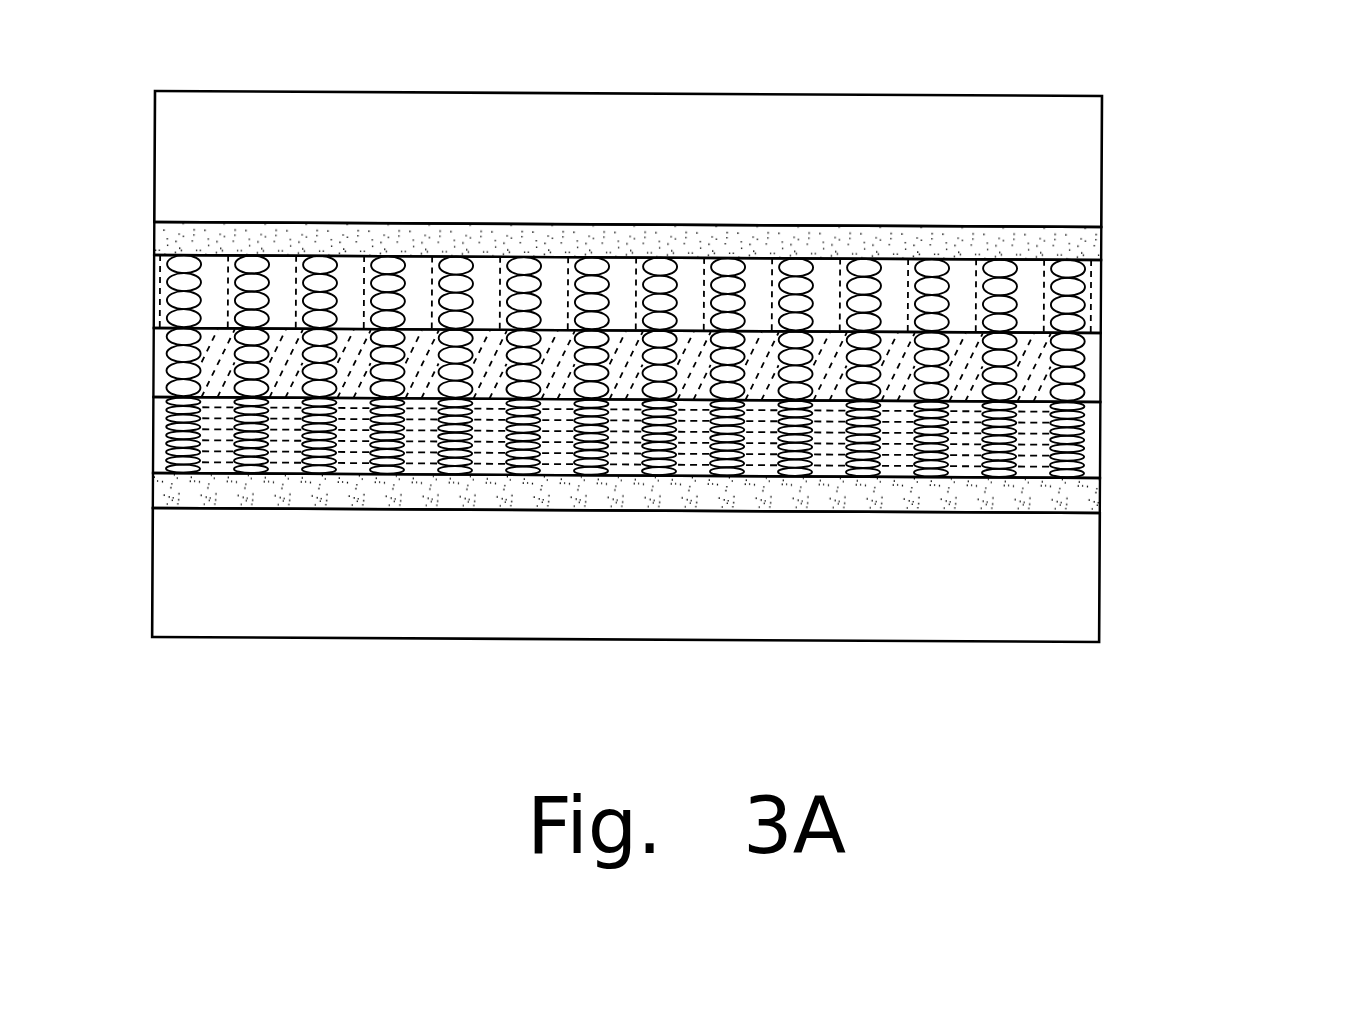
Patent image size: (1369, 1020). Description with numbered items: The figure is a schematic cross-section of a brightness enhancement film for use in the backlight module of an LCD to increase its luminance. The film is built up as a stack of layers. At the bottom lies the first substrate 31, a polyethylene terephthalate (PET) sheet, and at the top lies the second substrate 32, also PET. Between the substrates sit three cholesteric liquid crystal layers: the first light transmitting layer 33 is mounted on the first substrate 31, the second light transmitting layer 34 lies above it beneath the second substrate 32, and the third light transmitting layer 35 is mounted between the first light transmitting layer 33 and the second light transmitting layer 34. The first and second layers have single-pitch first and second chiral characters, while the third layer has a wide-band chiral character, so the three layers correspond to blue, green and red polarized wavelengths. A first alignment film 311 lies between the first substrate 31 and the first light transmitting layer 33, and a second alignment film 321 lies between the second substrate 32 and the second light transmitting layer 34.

The first substrate 31 is at (1072, 597).
The first alignment film 311 is at (1072, 498).
The second substrate 32 is at (1073, 160).
The second alignment film 321 is at (1073, 248).
The first light transmitting layer 33 is at (1087, 430).
The second light transmitting layer 34 is at (1073, 307).
The third light transmitting layer 35 is at (1087, 377).